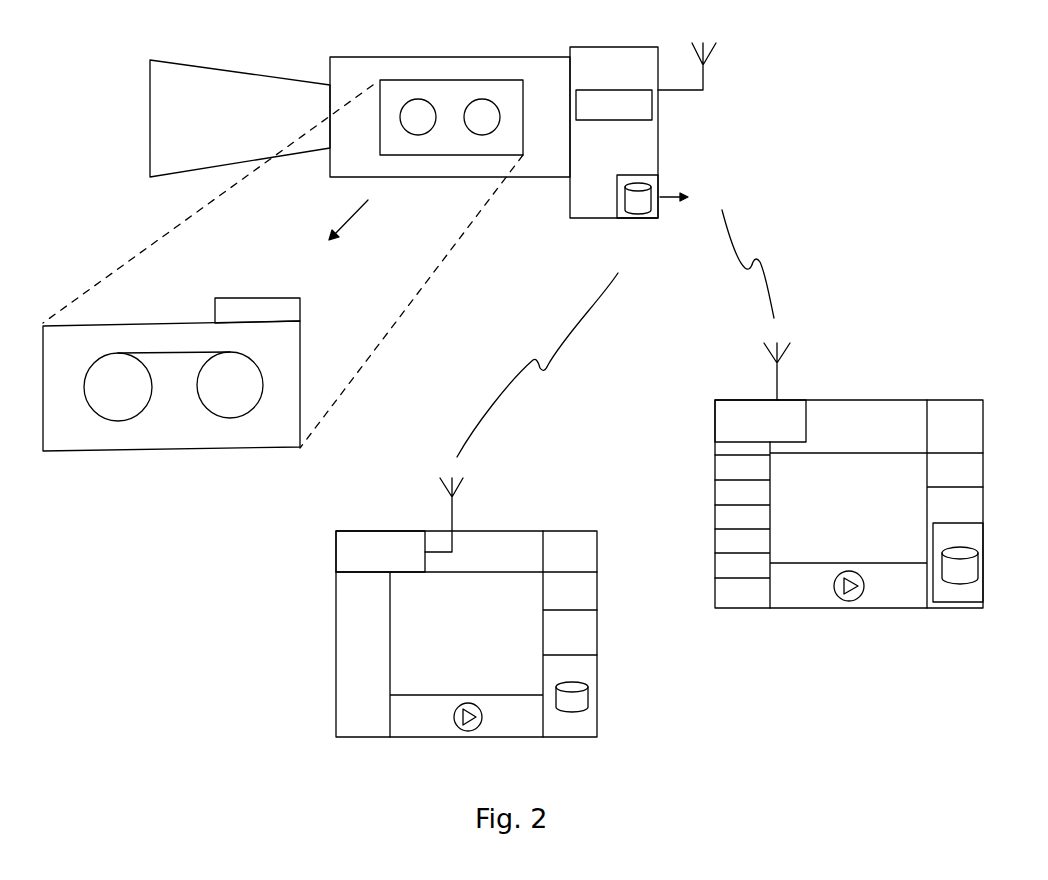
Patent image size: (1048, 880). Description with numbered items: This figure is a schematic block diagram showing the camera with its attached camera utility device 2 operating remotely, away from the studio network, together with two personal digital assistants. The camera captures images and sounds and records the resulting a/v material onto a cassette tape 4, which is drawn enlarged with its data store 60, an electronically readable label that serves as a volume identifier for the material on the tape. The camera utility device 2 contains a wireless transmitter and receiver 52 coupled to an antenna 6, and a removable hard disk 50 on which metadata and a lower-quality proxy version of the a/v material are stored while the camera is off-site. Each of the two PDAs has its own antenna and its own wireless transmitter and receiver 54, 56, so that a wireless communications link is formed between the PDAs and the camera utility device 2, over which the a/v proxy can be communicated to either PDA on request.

The camera utility device 2 is at (614, 47).
The cassette tape 4 is at (236, 450).
The antenna 6 is at (711, 50).
The removable hard disk 50 is at (635, 218).
The wireless transmitter and receiver 52 is at (610, 121).
The wireless transmitter and receiver 54 is at (335, 549).
The wireless transmitter and receiver 56 is at (715, 428).
The data store 60 is at (242, 298).